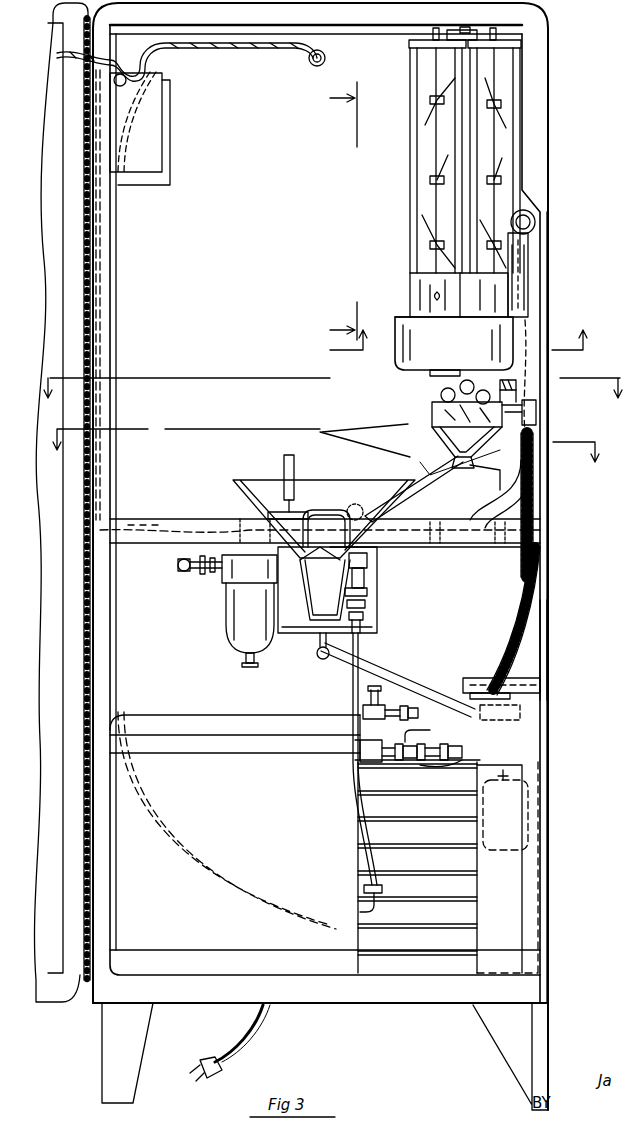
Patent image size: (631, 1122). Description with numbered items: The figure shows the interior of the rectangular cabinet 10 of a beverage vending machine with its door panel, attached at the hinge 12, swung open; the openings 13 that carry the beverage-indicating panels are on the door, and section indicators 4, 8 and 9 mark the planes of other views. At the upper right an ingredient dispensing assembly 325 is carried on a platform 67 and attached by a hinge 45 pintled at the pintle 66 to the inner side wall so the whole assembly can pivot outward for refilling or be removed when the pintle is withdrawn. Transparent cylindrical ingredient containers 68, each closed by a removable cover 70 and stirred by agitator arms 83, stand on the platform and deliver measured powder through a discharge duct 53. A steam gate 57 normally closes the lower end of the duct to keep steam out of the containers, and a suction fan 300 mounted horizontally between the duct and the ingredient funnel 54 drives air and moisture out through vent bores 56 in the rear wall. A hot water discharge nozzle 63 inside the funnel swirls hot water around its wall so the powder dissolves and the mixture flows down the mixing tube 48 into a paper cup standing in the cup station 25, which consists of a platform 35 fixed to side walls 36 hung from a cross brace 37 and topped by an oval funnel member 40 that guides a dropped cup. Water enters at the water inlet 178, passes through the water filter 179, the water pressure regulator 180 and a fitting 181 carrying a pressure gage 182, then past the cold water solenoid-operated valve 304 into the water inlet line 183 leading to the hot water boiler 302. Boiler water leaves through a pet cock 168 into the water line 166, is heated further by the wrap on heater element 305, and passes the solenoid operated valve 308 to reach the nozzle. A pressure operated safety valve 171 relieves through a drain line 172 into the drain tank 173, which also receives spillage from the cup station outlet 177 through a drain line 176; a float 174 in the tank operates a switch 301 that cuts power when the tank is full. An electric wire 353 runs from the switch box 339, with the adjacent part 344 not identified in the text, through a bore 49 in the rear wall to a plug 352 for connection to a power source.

The cabinet 10 is at (558, 190).
The hinge 12 is at (80, 1000).
The electric wire 353 is at (232, 47).
The bore 49 is at (326, 58).
The switch box 339 is at (172, 130).
The junction box cover 344 is at (150, 152).
The removable cover 70 is at (522, 43).
The ingredient dispensing assembly 325 is at (403, 233).
The ingredient containers 68 is at (505, 147).
The agitator arms 83 is at (505, 125).
The pintle 66 is at (525, 270).
The hinge 45 is at (526, 302).
The discharge duct 53 is at (500, 340).
The platform 67 is at (398, 317).
The suction fan 300 is at (432, 408).
The vent bores 56 is at (440, 394).
The steam gate 57 is at (430, 373).
The ingredient funnel 54 is at (448, 447).
The mixing tube 48 is at (447, 424).
The hot water discharge nozzle 63 is at (536, 405).
The solenoid operated valve 308 is at (535, 434).
The section line 8- 8 is at (327, 378).
The section line 9- 9 is at (321, 439).
The section line 4- 4 is at (462, 350).
The openings 13 is at (355, 211).
The cross brace 37 is at (172, 520).
The funnel member 40 is at (258, 480).
The pressure gage 182 is at (352, 510).
The side walls 36 is at (380, 590).
The water pressure regulator 180 is at (310, 590).
The cold water solenoid-operated valve 304 is at (366, 574).
The cup station 25 is at (362, 610).
The platform 35 is at (366, 633).
The water filter 179 is at (242, 608).
The water inlet 178 is at (190, 570).
The outlet 177 is at (318, 650).
The drain line 176 is at (400, 668).
The water inlet line 183 is at (352, 697).
The pressure operated safety valve 171 is at (386, 707).
The drain line 172 is at (415, 720).
The pet cock 168 is at (432, 743).
The switch 301 is at (505, 688).
The wrap on heater element 305 is at (512, 622).
The water line 166 is at (530, 598).
The fitting 181 is at (416, 553).
The hot water boiler 302 is at (258, 827).
The drain tank 173 is at (512, 866).
The float 174 is at (503, 805).
The plug 352 is at (204, 1057).